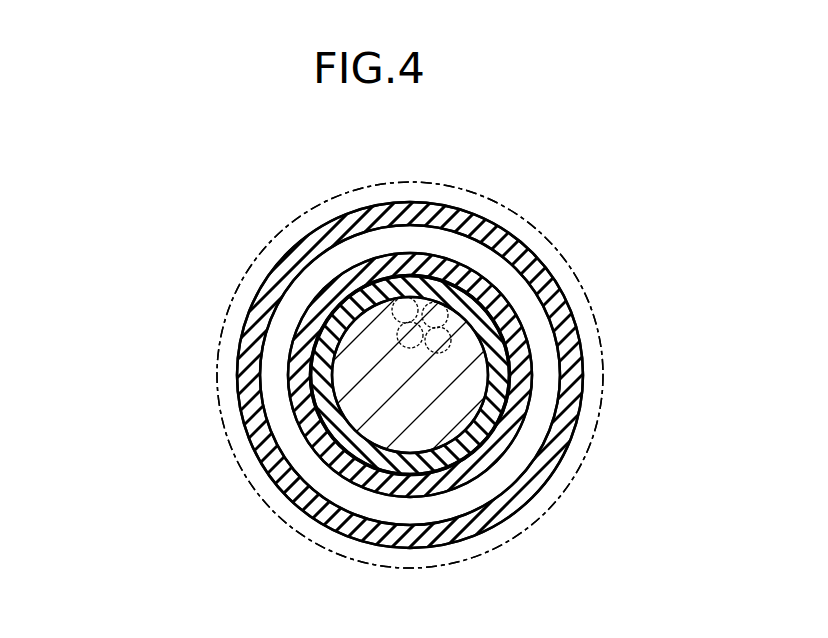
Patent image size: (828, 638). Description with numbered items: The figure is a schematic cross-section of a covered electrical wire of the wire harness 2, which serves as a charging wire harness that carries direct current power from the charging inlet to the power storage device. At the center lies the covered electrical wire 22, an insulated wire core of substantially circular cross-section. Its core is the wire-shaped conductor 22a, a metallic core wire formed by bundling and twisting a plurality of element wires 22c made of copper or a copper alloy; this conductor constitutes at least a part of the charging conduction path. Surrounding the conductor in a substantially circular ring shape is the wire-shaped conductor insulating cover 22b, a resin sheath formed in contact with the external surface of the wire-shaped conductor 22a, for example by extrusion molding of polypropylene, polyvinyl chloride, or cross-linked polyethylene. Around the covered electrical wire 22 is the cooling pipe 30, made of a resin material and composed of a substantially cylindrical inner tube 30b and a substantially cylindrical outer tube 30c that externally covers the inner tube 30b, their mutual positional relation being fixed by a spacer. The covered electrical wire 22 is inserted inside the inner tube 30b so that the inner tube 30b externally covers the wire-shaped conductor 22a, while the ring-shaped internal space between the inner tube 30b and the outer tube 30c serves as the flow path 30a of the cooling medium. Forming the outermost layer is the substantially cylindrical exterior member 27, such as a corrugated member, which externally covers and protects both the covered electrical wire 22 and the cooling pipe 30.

The wire harness 2 is at (288, 181).
The exterior member 27 is at (321, 548).
The cooling pipe 30 is at (553, 268).
The flow path 30a is at (443, 510).
The inner tube 30b is at (371, 487).
The outer tube 30c is at (508, 510).
The covered electrical wire 22 is at (142, 345).
The wire-shaped conductor 22a is at (348, 375).
The wire-shaped conductor insulating cover 22b is at (322, 343).
The element wire 22c is at (447, 302).